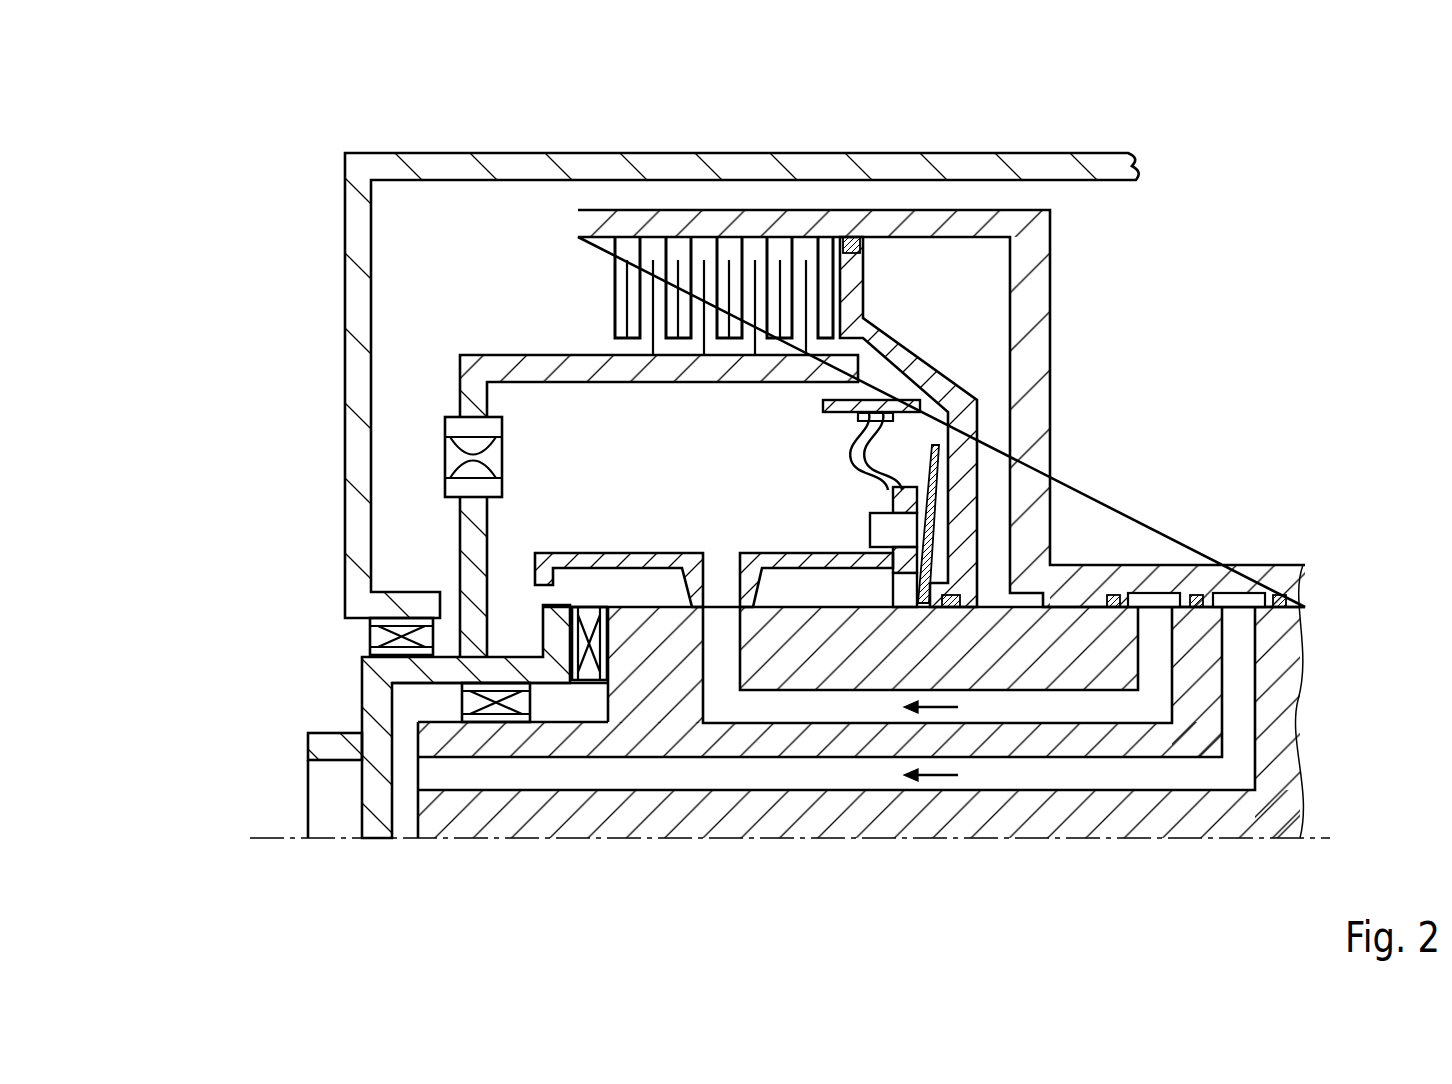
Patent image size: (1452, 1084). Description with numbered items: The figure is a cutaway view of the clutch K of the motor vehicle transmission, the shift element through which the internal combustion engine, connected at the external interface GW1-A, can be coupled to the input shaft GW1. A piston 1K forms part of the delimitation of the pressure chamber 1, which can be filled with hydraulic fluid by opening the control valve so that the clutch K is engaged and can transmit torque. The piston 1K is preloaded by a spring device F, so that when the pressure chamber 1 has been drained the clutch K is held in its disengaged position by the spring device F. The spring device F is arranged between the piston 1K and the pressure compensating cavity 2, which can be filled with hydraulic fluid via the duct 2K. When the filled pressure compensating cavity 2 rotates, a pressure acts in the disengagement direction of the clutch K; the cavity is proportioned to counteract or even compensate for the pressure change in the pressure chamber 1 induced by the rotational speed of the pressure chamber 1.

The clutch K is at (601, 295).
The pressure chamber 1 is at (990, 320).
The piston 1K is at (957, 390).
The pressure compensating cavity 2 is at (903, 460).
The spring device F is at (950, 469).
The input shaft GW1 is at (1030, 522).
The external interface GW1-A is at (343, 748).
The duct 2K is at (1147, 652).